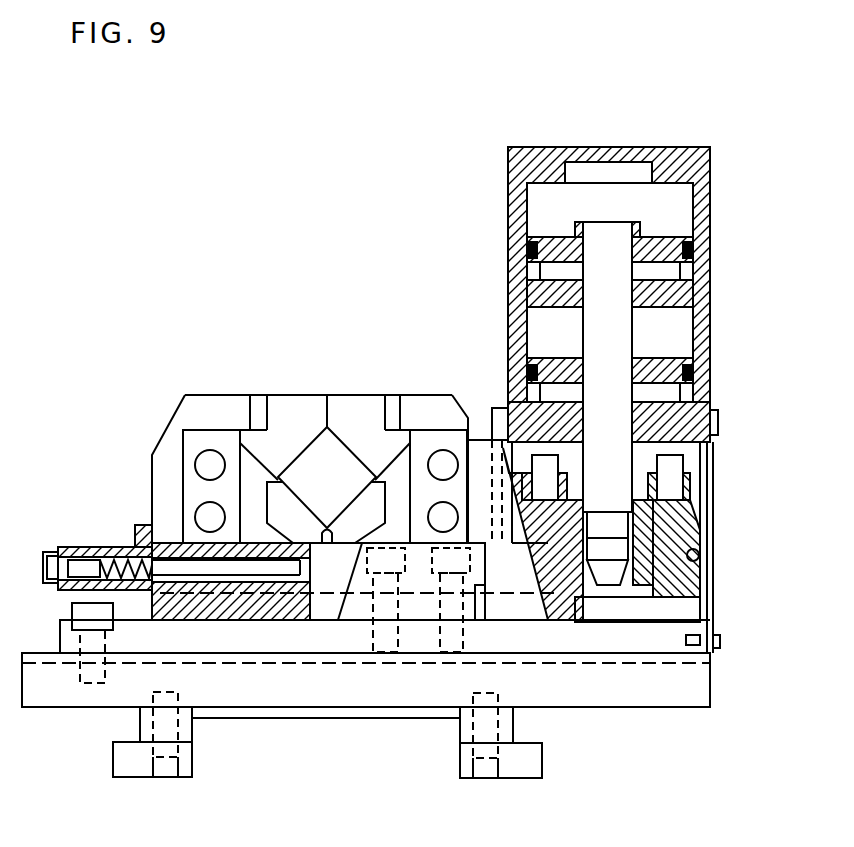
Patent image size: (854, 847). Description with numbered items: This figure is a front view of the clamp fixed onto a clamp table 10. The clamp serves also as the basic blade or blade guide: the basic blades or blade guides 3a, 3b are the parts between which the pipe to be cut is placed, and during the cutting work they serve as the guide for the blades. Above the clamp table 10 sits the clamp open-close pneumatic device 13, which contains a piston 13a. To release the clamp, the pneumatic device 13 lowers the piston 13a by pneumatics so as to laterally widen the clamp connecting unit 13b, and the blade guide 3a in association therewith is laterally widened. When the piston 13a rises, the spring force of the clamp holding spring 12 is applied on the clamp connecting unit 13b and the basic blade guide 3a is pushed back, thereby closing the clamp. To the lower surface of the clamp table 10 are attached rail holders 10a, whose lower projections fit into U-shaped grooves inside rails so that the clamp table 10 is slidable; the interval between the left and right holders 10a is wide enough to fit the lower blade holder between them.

The basic blade guide 3a is at (222, 398).
The basic blade guide 3b is at (412, 398).
The clamp table 10 is at (706, 688).
The rail holder 10a is at (190, 751).
The clamp holding spring 12 is at (98, 547).
The clamp open-close pneumatic device 13 is at (703, 238).
The piston 13a is at (637, 450).
The clamp connecting unit 13b is at (560, 620).